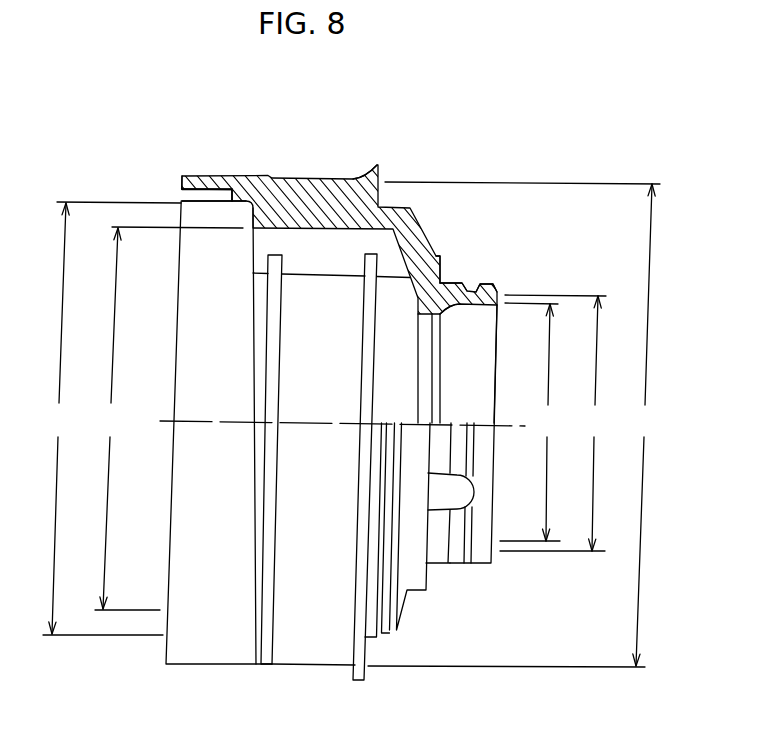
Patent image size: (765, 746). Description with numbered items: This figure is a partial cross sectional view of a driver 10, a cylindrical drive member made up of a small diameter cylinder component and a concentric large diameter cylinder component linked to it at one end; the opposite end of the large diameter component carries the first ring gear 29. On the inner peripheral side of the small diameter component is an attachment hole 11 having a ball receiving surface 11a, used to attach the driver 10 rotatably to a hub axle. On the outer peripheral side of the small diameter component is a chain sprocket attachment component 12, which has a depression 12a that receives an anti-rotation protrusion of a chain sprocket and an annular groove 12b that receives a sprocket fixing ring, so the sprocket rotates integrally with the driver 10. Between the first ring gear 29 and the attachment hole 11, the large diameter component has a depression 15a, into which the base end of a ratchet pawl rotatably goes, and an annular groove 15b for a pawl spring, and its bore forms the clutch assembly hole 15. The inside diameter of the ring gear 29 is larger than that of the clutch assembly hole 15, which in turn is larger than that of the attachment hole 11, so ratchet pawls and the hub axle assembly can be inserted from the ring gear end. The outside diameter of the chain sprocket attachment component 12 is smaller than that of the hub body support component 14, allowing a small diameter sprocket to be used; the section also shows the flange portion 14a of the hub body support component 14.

The driver 10 is at (167, 173).
The hub body support component 14 is at (293, 175).
The flange projection 14a is at (347, 178).
The clutch assembly hole 15 is at (253, 337).
The depression 15a is at (288, 229).
The annular groove 15b is at (365, 295).
The first ring gear 29 is at (213, 200).
The chain sprocket attachment component 12 is at (505, 288).
The depression 12a is at (447, 258).
The annular groove 12b is at (470, 285).
The attachment hole 11 is at (497, 335).
The ball receiving surface 11a is at (462, 303).